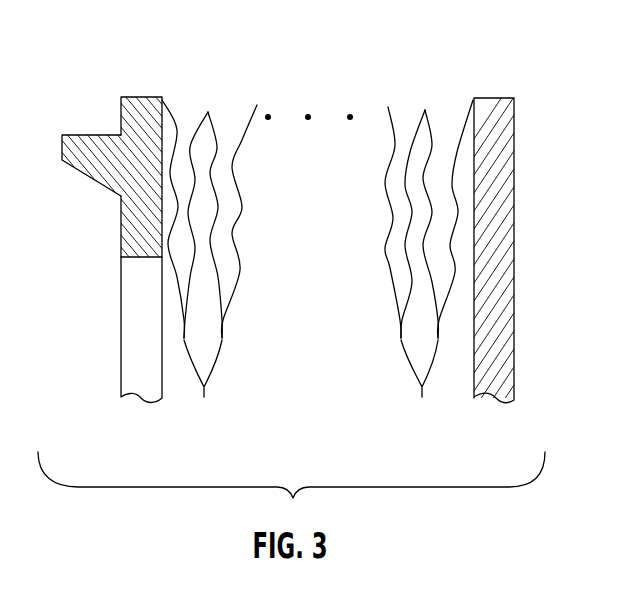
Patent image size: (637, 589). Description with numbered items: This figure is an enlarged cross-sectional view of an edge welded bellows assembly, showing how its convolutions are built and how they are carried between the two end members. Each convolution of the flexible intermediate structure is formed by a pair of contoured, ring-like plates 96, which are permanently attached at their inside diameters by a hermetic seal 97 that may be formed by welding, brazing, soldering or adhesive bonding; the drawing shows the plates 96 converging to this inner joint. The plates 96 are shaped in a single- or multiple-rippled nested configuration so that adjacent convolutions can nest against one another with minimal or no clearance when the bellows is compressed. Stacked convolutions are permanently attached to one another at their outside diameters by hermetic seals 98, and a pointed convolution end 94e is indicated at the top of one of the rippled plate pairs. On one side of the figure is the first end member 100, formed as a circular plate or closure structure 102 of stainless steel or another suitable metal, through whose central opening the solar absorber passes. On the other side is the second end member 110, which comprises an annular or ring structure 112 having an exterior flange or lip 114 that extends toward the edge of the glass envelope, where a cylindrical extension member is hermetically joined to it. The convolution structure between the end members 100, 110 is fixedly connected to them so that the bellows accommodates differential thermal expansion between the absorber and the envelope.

The fiber end / streamer tip 94e is at (425, 110).
The contoured, ring-like plates 96 is at (217, 280).
The hermetic seal 97 is at (311, 389).
The hermetic seals 98 is at (167, 110).
The first end member 100 is at (514, 118).
The circular plate or closure structure 102 is at (507, 190).
The second end member 110 is at (120, 335).
The annular or ring structure 112 is at (143, 113).
The exterior flange or lip 114 is at (95, 165).